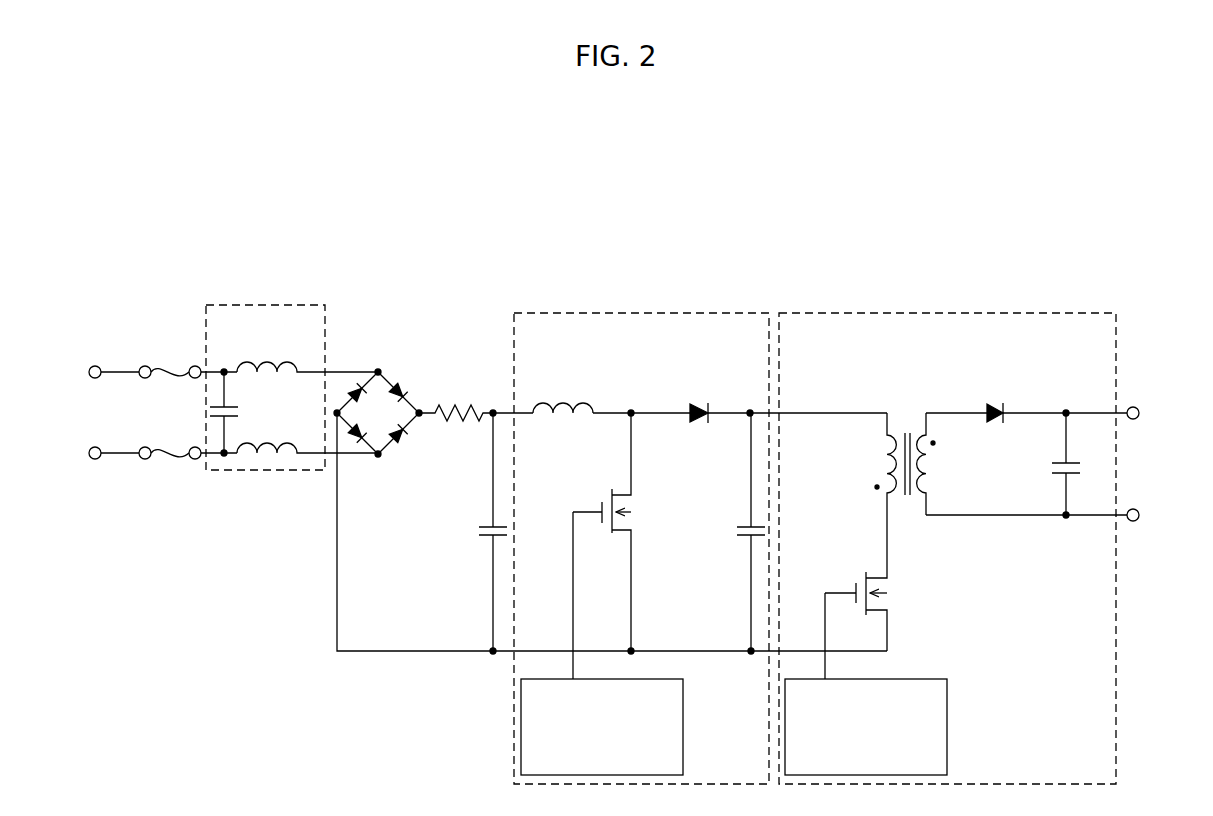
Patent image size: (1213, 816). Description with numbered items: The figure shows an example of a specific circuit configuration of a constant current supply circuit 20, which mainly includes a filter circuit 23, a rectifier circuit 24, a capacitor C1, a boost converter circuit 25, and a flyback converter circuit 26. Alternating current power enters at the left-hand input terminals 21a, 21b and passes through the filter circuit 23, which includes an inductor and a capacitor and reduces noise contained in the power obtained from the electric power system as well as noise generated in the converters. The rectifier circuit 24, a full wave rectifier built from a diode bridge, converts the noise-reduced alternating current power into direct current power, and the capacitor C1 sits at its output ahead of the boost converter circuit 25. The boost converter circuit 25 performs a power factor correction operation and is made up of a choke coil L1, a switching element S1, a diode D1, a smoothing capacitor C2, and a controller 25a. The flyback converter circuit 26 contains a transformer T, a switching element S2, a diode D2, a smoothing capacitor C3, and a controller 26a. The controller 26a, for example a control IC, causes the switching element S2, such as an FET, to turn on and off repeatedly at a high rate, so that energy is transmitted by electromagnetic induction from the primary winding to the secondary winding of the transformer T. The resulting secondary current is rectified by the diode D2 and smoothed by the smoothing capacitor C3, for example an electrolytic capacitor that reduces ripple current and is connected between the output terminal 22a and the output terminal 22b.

The constant current supply circuit 20 is at (1042, 232).
The input terminal 21a is at (90, 367).
The input terminal 21b is at (90, 458).
The output terminal 22a is at (1140, 408).
The output terminal 22b is at (1140, 522).
The filter circuit 23 is at (300, 305).
The rectifier circuit 24 is at (398, 370).
The boost converter circuit 25 is at (712, 313).
The controller 25a is at (617, 678).
The flyback converter circuit 26 is at (1040, 313).
The controller 26a is at (880, 679).
The choke coil L1 is at (565, 402).
The diode D1 is at (697, 400).
The switching element S1 is at (640, 513).
The capacitor C1 is at (483, 531).
The smoothing capacitor C2 is at (741, 531).
The transformer T is at (905, 425).
The diode D2 is at (995, 403).
The smoothing capacitor C3 is at (1052, 470).
The switching element S2 is at (895, 595).